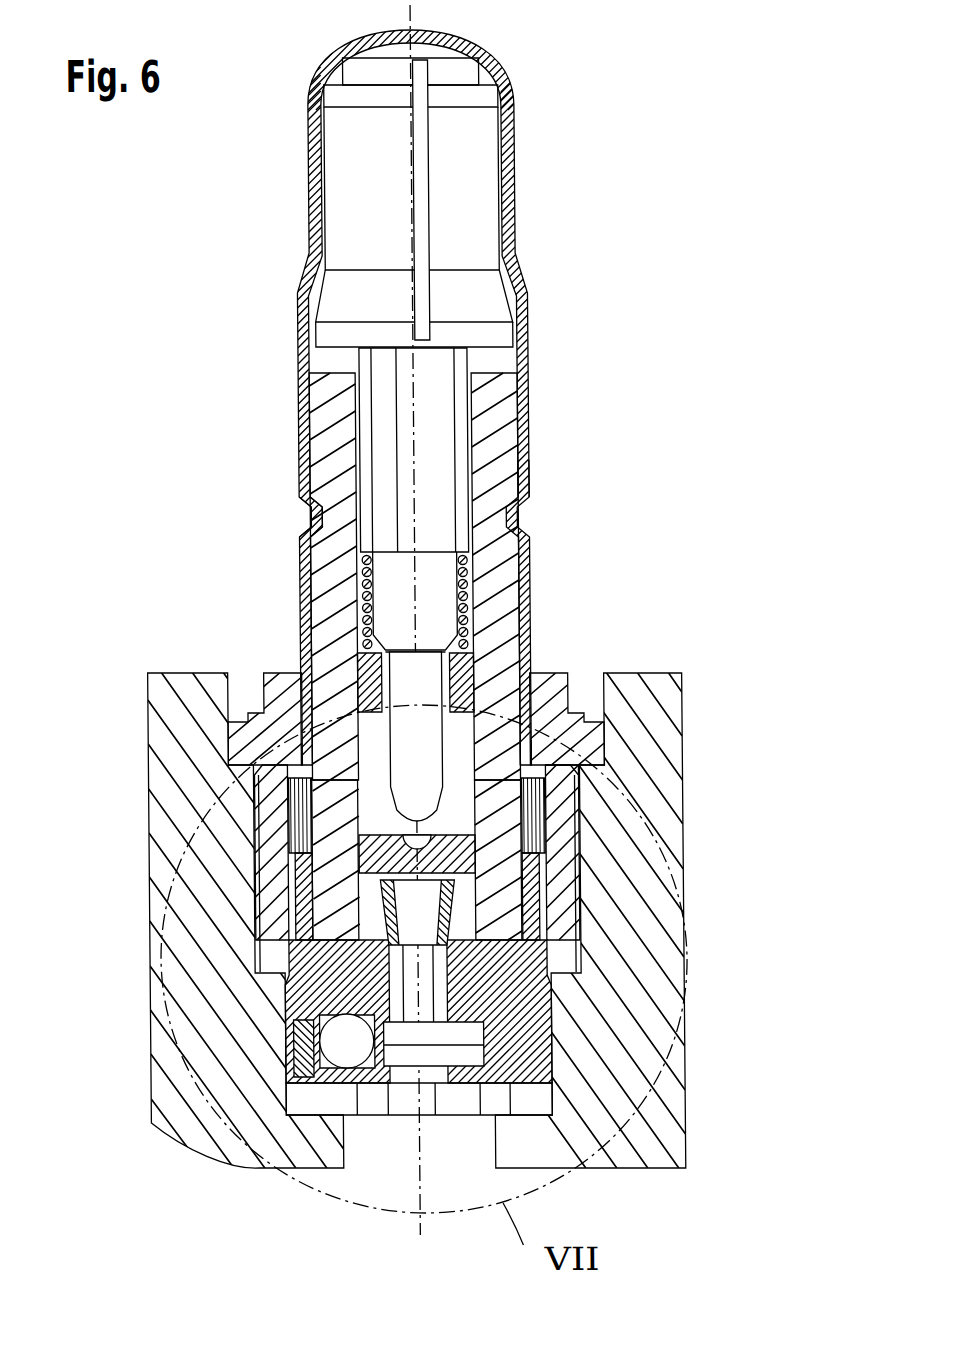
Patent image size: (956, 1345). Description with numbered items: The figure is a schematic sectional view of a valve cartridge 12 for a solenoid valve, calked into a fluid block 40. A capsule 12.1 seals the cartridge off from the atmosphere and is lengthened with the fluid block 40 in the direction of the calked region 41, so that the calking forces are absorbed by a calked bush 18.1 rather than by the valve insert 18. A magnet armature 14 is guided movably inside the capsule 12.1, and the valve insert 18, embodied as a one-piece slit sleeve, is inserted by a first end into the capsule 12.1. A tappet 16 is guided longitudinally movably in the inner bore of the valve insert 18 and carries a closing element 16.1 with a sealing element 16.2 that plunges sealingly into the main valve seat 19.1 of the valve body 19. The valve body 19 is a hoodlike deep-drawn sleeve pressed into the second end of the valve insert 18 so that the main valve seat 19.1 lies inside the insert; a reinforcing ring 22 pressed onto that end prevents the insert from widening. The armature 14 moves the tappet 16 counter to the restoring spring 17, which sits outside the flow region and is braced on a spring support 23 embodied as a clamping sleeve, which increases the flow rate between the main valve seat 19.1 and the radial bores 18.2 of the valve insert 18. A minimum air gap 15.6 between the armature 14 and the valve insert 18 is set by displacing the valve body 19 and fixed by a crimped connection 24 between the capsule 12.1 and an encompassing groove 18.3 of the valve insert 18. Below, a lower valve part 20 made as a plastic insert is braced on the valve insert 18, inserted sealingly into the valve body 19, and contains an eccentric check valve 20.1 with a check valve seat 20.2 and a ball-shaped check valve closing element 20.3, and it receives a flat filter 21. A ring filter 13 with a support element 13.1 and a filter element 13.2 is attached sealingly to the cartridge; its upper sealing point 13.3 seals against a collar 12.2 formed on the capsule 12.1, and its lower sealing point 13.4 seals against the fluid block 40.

The valve cartridge 12 is at (292, 54).
The capsule 12.1 is at (504, 99).
The collar 12.2 is at (592, 745).
The ring filter 13 is at (582, 848).
The support element 13.1 is at (271, 758).
The filter element 13.2 is at (295, 908).
The upper sealing point 13.3 is at (581, 776).
The lower sealing point 13.4 is at (619, 1045).
The magnet armature 14 is at (346, 198).
The air gap 15.6 is at (495, 360).
The tappet 16 is at (433, 445).
The closing element 16.1 is at (391, 730).
The sealing element 16.2 is at (293, 828).
The restoring spring 17 is at (460, 616).
The valve insert 18 is at (497, 562).
The calked bush 18.1 is at (556, 688).
The radial bores 18.2 is at (327, 801).
The encompassing groove 18.3 is at (519, 475).
The valve body 19 is at (575, 995).
The main valve seat 19.1 is at (462, 921).
The lower valve part 20 is at (270, 999).
The check valve 20.1 is at (358, 1115).
The check valve seat 20.2 is at (324, 1040).
The check valve closing element 20.3 is at (291, 1045).
The flat filter 21 is at (466, 1078).
The reinforcing ring 22 is at (263, 887).
The spring support 23 is at (360, 625).
The crimped connection 24 is at (302, 510).
The fluid block 40 is at (656, 692).
The calked region 41 is at (204, 738).